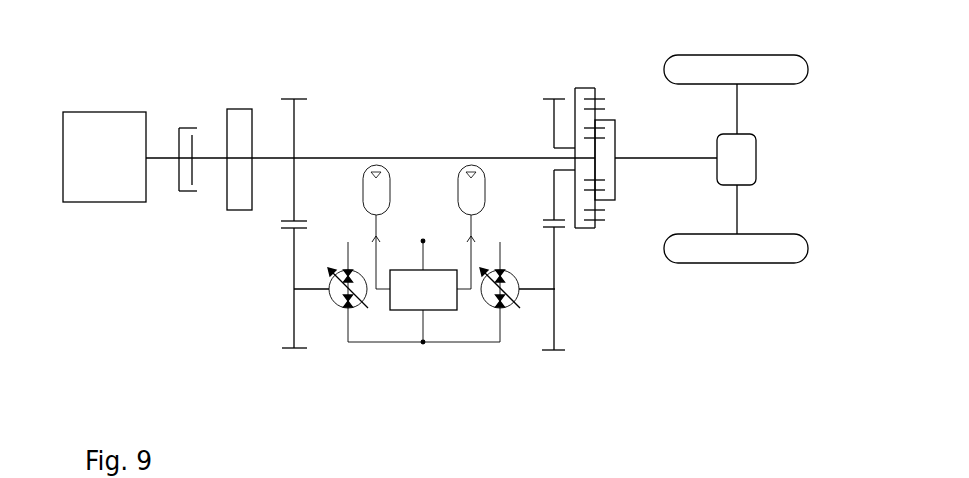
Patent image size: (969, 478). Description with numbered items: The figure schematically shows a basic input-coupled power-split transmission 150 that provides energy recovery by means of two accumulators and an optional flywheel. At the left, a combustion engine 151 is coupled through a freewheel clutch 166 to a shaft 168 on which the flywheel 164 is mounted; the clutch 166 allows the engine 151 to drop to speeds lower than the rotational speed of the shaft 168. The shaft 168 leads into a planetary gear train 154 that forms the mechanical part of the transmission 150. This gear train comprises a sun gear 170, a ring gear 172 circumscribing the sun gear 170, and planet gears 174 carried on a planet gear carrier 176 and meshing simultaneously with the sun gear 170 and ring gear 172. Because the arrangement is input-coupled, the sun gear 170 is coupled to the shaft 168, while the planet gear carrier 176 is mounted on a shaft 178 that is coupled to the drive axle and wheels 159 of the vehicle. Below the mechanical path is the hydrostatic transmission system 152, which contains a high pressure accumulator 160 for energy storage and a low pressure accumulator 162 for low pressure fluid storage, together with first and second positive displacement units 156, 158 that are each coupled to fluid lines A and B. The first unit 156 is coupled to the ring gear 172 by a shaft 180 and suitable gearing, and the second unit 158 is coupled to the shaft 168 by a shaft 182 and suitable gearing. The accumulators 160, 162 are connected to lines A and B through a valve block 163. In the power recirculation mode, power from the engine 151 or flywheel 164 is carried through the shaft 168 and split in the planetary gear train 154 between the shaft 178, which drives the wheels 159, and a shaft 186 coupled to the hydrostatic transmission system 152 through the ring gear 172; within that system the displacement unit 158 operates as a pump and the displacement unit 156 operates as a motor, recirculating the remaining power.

The input-coupled PSD transmission 150 is at (166, 72).
The combustion engine 151 is at (92, 193).
The hydrostatic transmission system 152 is at (370, 402).
The planetary gear train 154 is at (506, 70).
The first positive displacement unit 156 is at (340, 305).
The second positive displacement unit 158 is at (508, 307).
The drive axle and wheels 159 is at (830, 157).
The high pressure accumulator 160 is at (363, 190).
The low pressure accumulator 162 is at (460, 180).
The valve block 163 is at (435, 310).
The flywheel 164 is at (234, 212).
The freewheel clutch 166 is at (187, 190).
The shaft 168 is at (351, 159).
The sun gear 170 is at (594, 152).
The ring gear 172 is at (585, 89).
The planet gears 174 is at (595, 203).
The planet gear carrier 176 is at (615, 202).
The shaft 178 is at (643, 160).
The shaft 180 is at (312, 288).
The shaft 182 is at (537, 290).
The shaft 186 is at (521, 122).